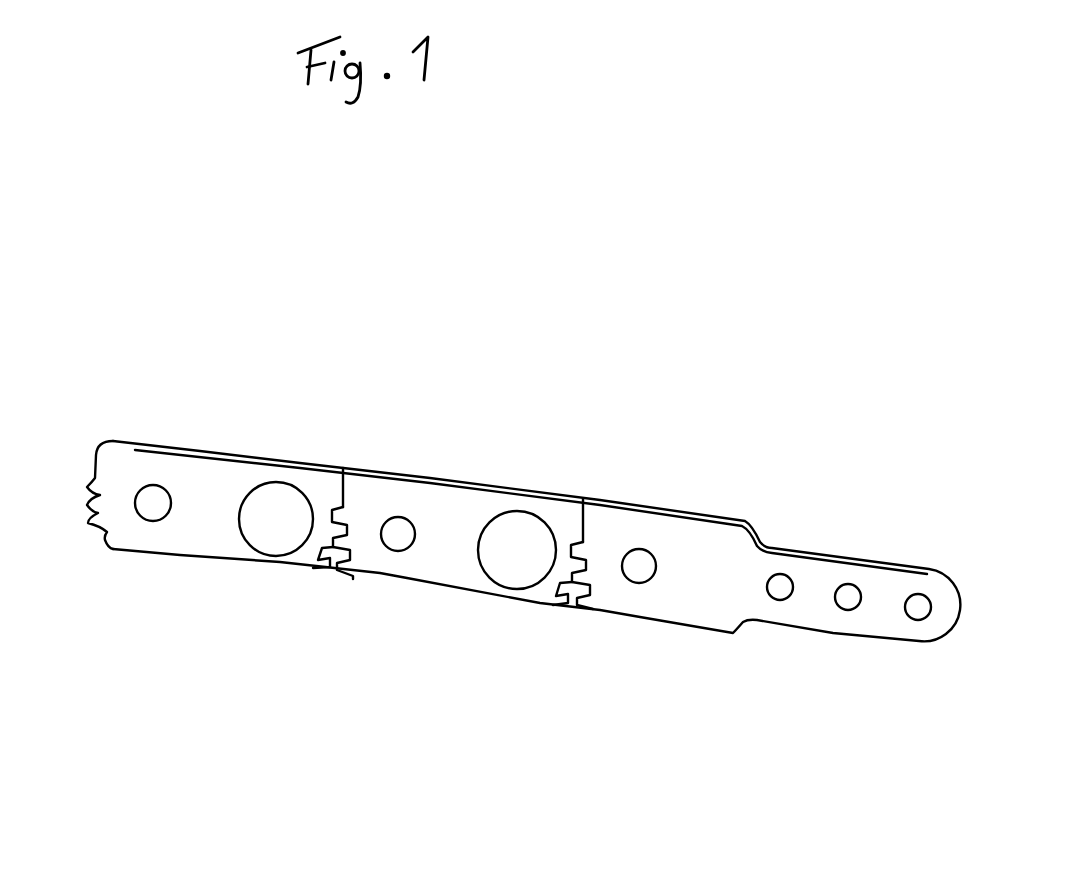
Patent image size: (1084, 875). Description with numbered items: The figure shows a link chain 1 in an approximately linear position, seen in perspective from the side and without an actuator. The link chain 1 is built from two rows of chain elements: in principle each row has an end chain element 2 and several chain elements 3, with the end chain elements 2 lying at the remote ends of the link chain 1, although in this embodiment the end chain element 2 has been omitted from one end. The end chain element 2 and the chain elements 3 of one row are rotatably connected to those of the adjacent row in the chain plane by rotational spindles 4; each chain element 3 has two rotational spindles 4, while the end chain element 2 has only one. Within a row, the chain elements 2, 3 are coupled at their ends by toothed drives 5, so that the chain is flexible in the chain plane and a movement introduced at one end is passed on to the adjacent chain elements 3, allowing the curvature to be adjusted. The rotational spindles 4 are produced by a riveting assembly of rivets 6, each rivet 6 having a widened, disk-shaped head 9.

The link chain 1 is at (408, 264).
The end chain element 2 is at (808, 721).
The chain element 3 is at (180, 660).
The rotational spindle 4 is at (505, 790).
The toothed drive 5 is at (593, 717).
The rivet 6 is at (468, 455).
The disk-shaped head 9 is at (587, 447).